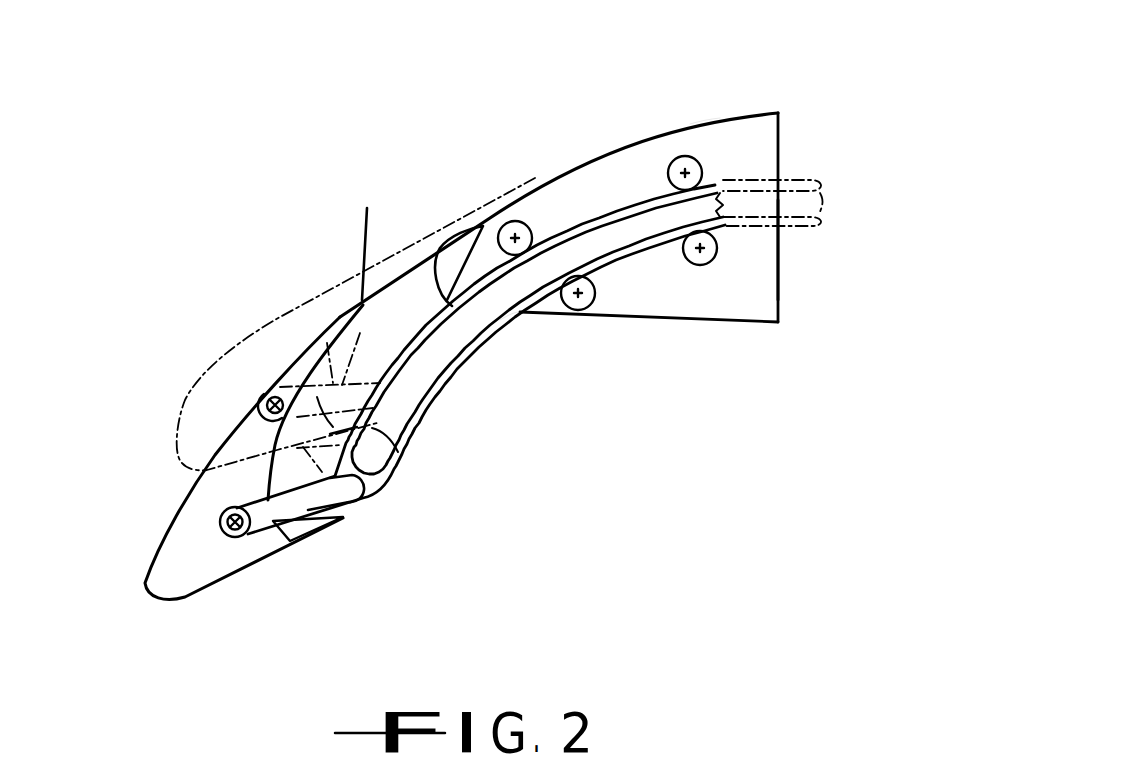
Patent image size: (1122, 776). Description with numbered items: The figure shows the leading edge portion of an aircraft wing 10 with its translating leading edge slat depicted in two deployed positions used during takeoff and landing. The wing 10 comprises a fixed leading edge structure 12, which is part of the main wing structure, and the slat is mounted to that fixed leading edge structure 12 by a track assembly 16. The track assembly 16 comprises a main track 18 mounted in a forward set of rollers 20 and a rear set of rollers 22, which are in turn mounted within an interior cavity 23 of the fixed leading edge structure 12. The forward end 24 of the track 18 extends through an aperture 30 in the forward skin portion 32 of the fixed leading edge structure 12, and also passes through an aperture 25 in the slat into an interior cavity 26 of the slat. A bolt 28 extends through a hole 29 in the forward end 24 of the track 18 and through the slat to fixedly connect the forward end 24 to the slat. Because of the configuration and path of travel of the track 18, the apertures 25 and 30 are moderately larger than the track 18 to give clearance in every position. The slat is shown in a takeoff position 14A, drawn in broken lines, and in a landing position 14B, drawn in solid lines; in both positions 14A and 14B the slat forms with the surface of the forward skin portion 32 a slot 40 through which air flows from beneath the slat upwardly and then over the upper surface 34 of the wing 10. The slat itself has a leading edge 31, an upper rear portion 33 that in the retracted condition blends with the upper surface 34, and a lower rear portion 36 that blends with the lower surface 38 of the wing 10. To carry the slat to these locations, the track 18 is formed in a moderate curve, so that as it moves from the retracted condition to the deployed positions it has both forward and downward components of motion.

The wing 10 is at (651, 105).
The fixed leading edge structure 12 is at (610, 178).
The takeoff position of slat 14A is at (245, 342).
The landing position of slat 14B is at (155, 525).
The track assembly 16 is at (741, 168).
The main track 18 is at (730, 183).
The forward set of rollers 20 is at (524, 221).
The rear set of rollers 22 is at (696, 160).
The interior cavity 23 is at (760, 247).
The forward end of track 24 is at (262, 517).
The aperture in leading edge slat 25 is at (340, 525).
The interior cavity of leading edge slat 26 is at (207, 557).
The bolt 28 is at (247, 537).
The hole 29 is at (232, 538).
The aperture in forward skin portion 30 is at (524, 314).
The leading edge of slat 31 is at (153, 593).
The forward skin portion 32 is at (439, 286).
The upper rear portion of slat 33 is at (367, 208).
The upper surface of wing 34 is at (720, 118).
The lower rear portion of slat 36 is at (263, 513).
The lower surface of wing 38 is at (692, 322).
The slot 40 is at (397, 335).